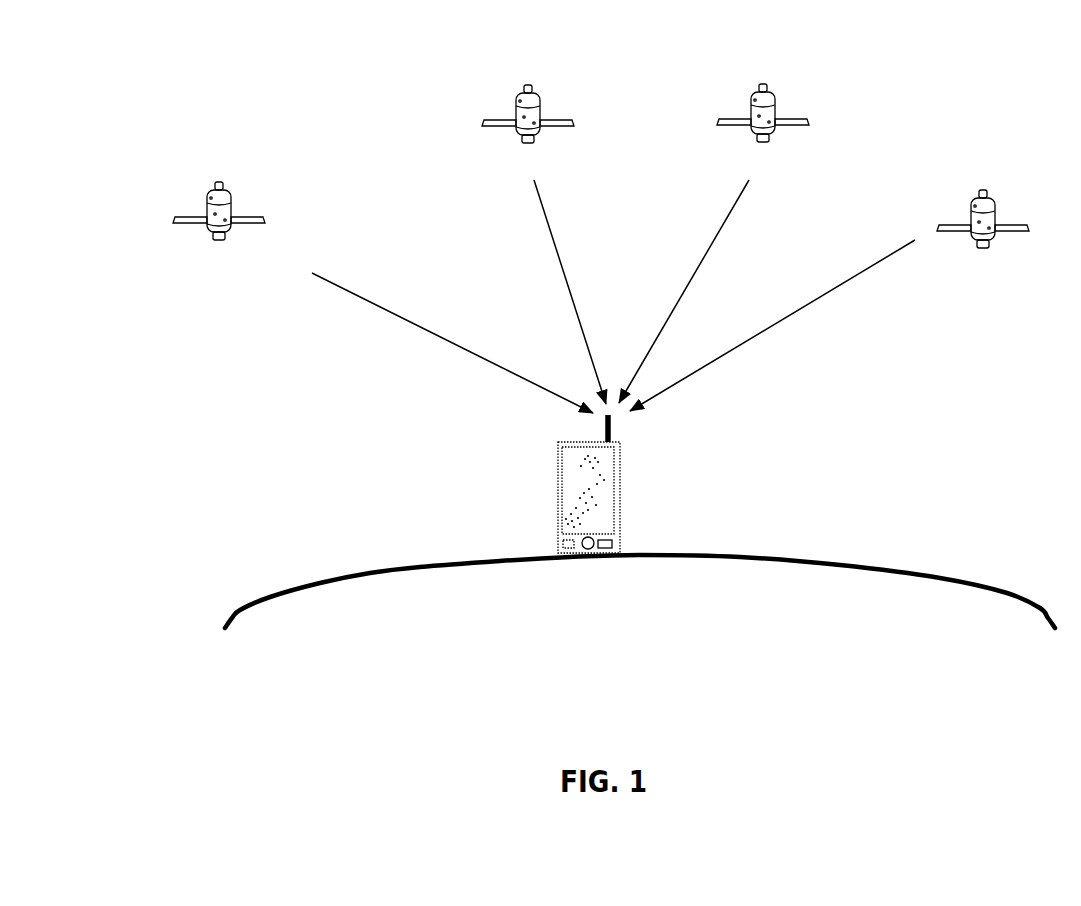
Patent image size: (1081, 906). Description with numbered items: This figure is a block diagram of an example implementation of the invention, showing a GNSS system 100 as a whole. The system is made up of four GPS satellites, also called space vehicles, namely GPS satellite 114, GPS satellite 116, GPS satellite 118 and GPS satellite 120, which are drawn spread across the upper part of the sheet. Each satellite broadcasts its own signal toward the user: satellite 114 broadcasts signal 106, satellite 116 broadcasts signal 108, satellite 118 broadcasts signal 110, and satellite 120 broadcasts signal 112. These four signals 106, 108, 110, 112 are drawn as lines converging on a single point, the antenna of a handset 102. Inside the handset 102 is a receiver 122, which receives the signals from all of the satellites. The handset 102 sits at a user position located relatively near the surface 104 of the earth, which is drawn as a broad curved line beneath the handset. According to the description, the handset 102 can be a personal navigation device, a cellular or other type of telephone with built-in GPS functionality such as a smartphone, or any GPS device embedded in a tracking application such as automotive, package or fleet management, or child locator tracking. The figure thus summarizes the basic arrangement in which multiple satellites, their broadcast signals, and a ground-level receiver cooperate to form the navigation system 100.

The GNSS system 100 is at (898, 152).
The handset 102 is at (618, 510).
The surface of earth 104 is at (500, 563).
The signal 106 is at (433, 337).
The signal 108 is at (557, 253).
The signal 110 is at (702, 258).
The signal 112 is at (748, 335).
The GPS satellite 114 is at (219, 227).
The GPS satellite 116 is at (529, 130).
The GPS satellite 118 is at (764, 128).
The GPS satellite 120 is at (984, 236).
The receiver 122 is at (587, 485).